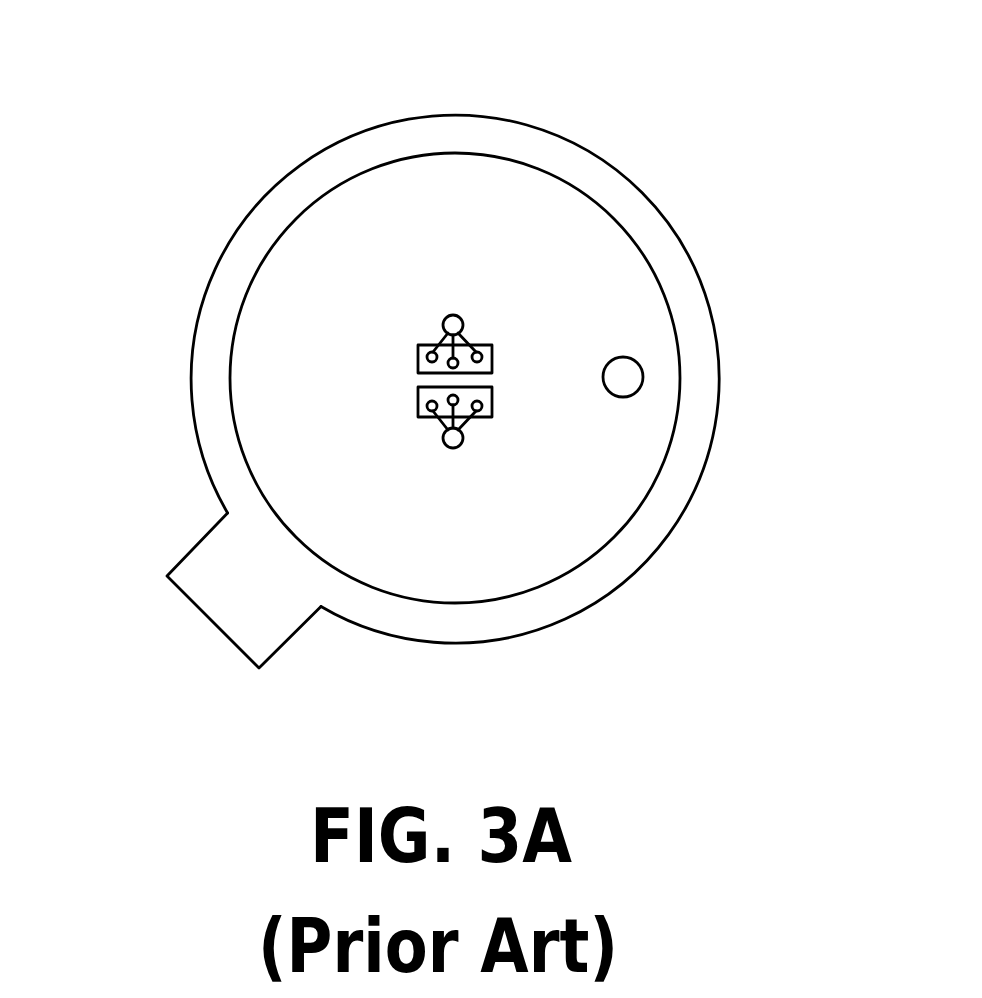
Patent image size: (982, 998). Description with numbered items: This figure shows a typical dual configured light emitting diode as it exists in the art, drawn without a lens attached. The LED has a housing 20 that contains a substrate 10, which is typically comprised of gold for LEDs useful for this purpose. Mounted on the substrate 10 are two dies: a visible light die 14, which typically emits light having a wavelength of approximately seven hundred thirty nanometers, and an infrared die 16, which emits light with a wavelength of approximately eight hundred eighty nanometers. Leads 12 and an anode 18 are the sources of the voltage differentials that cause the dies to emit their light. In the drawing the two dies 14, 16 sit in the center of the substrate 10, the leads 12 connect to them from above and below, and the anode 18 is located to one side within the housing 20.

The substrate 10 is at (268, 402).
The leads 12 is at (458, 321).
The visible light die 14 is at (492, 360).
The infrared die 16 is at (492, 405).
The anode 18 is at (626, 378).
The housing 20 is at (447, 132).